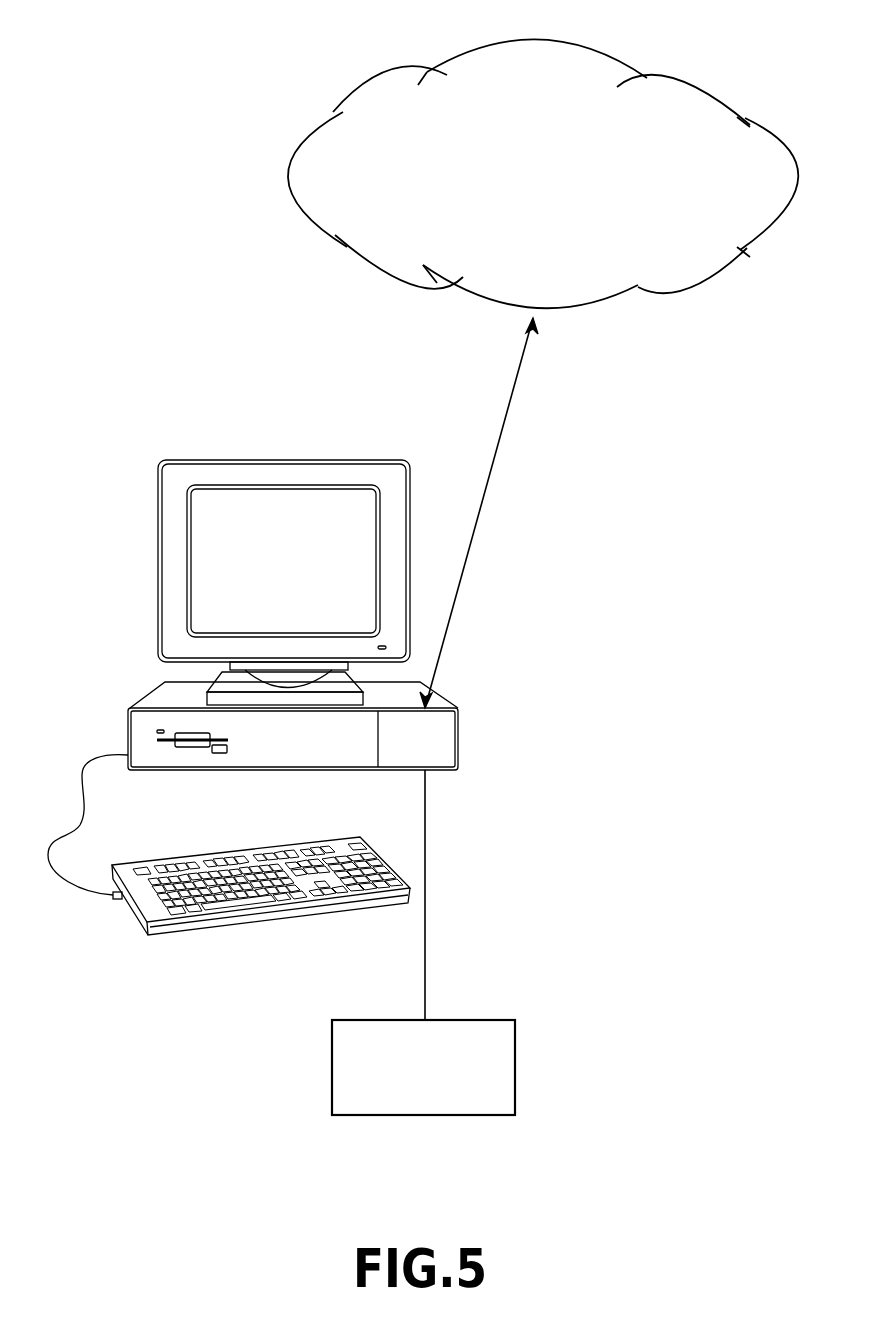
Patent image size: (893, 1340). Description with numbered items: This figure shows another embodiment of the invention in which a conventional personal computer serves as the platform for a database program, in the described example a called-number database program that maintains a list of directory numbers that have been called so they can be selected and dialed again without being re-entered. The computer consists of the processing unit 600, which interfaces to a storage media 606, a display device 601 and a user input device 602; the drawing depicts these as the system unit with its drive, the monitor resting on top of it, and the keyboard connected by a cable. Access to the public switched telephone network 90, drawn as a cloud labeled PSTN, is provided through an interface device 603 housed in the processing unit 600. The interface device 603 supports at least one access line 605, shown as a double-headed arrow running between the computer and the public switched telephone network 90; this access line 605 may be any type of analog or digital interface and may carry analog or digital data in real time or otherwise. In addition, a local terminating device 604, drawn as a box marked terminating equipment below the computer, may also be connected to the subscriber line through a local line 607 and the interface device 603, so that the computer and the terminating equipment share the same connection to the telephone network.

The public switched telephone network 90 is at (547, 37).
The processing unit 600 is at (127, 727).
The display device 601 is at (263, 455).
The user input device 602 is at (197, 855).
The interface device 603 is at (460, 738).
The local terminating device 604 is at (487, 1018).
The access line 605 is at (503, 445).
The storage media 606 is at (232, 753).
The local line 607 is at (427, 820).